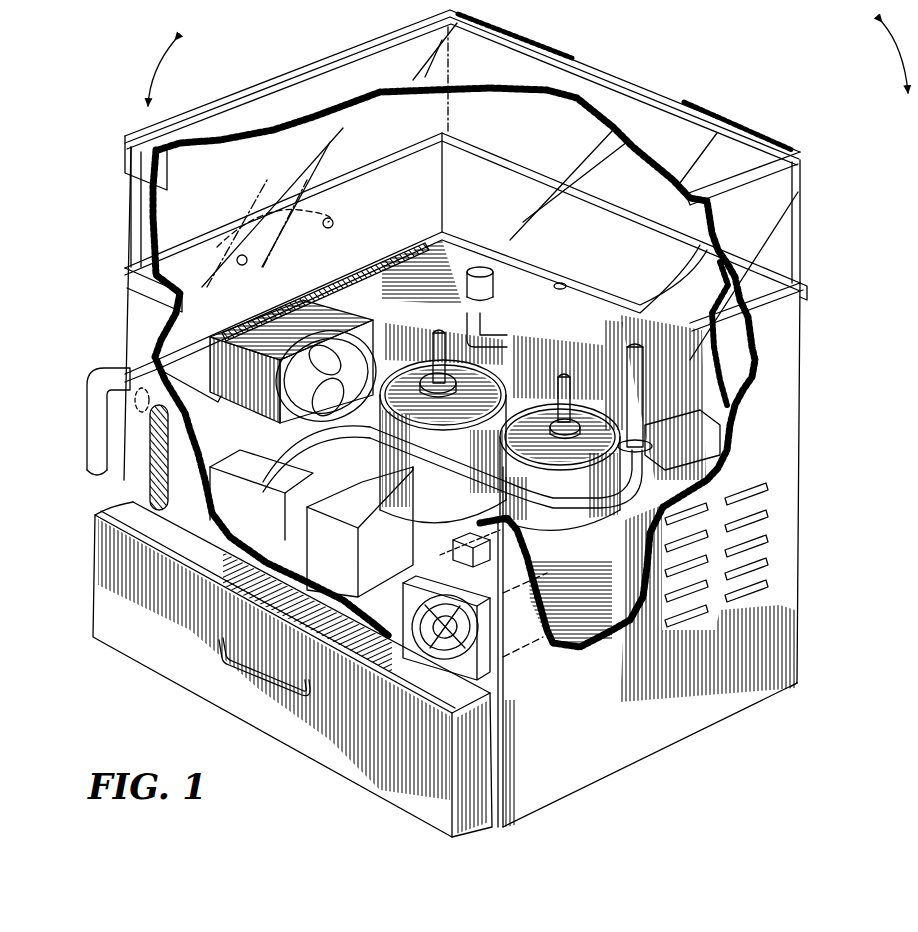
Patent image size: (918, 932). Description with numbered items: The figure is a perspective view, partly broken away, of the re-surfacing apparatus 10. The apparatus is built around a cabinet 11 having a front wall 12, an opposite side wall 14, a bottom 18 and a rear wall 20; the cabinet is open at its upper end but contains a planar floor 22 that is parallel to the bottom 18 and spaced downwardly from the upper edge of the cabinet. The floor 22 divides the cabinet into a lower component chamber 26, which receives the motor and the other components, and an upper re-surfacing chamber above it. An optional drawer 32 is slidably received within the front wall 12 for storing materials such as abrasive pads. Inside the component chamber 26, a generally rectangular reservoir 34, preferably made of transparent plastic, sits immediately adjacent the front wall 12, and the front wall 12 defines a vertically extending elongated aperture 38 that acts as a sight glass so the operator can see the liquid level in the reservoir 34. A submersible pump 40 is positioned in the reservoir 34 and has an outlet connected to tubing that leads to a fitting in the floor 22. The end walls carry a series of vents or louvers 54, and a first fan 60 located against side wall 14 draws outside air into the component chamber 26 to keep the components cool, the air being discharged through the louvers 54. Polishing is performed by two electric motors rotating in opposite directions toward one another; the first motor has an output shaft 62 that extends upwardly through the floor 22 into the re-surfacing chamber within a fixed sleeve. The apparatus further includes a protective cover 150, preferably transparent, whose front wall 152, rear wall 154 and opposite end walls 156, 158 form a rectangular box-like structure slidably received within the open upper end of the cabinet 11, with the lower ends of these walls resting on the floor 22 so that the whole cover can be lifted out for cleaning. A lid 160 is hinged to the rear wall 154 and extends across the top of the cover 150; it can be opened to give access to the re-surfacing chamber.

The re-surfacing apparatus 10 is at (656, 36).
The cabinet 11 is at (603, 757).
The front wall 12 is at (127, 487).
The side wall 14 is at (124, 312).
The bottom 18 is at (567, 793).
The rear wall 20 is at (800, 690).
The floor 22 is at (396, 248).
The component chamber 26 is at (547, 389).
The drawer 32 is at (380, 783).
The reservoir 34 is at (205, 356).
The aperture 38 is at (179, 470).
The submersible pump 40 is at (302, 536).
The louvers 54 is at (776, 548).
The first fan 60 is at (310, 318).
The output shaft 62 is at (630, 583).
The protective cover 150 is at (674, 96).
The front wall 152 is at (148, 241).
The rear wall 154 is at (803, 173).
The end wall 156 is at (133, 201).
The end wall 158 is at (762, 289).
The lid 160 is at (736, 170).